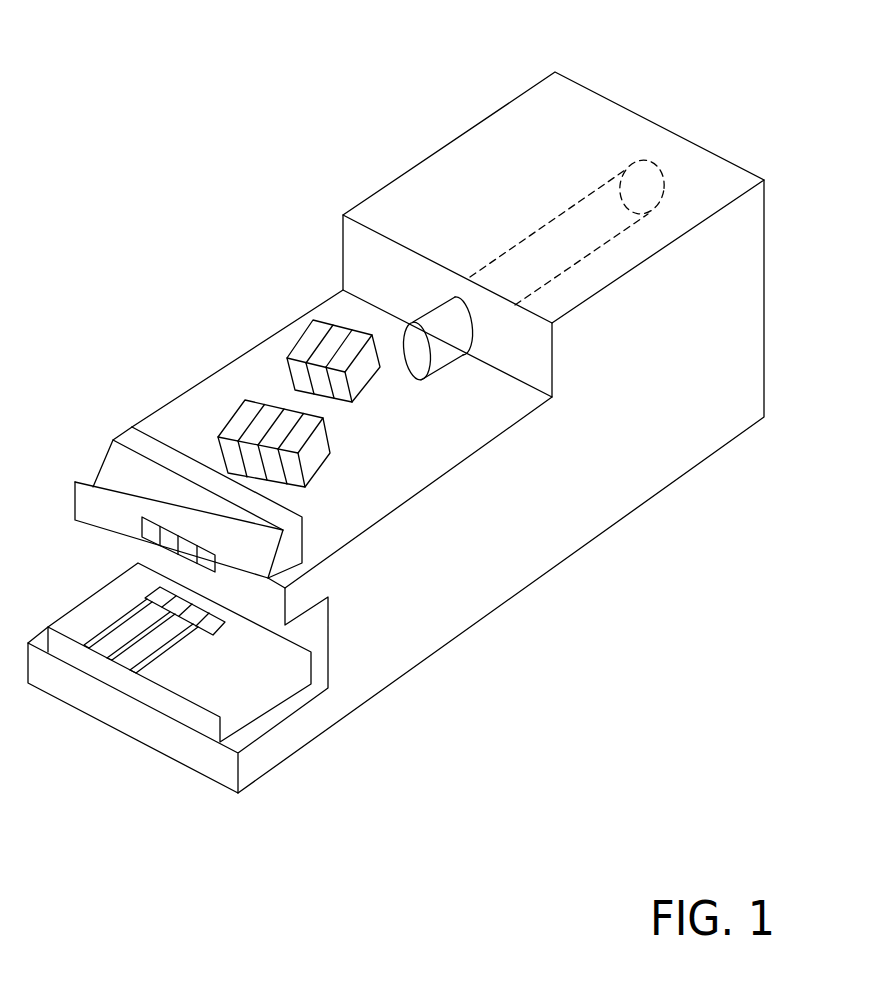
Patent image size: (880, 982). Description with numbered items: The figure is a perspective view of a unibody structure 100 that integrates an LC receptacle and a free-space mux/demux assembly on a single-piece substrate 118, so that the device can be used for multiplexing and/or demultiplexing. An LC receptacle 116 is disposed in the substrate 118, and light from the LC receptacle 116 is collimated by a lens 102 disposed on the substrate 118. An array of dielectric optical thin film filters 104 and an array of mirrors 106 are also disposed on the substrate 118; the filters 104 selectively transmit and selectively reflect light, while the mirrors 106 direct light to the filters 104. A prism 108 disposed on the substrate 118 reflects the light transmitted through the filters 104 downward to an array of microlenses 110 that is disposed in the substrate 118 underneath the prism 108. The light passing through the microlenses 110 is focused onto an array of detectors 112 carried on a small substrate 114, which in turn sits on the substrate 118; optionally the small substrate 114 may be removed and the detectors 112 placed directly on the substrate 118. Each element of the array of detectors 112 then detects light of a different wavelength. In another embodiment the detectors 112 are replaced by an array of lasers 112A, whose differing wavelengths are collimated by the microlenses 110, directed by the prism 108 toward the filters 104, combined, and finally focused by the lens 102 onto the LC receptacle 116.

The unibody structure 100 is at (133, 47).
The lens 102 is at (437, 370).
The array of dielectric optical thin film filters 104 is at (320, 477).
The array of mirrors 106 is at (358, 398).
The prism 108 is at (128, 426).
The array of microlenses 110 is at (215, 567).
The array of detectors 112 is at (230, 625).
The array of lasers 112A is at (189, 660).
The small substrate 114 is at (74, 607).
The LC receptacle 116 is at (560, 217).
The single-piece substrate 118 is at (687, 393).